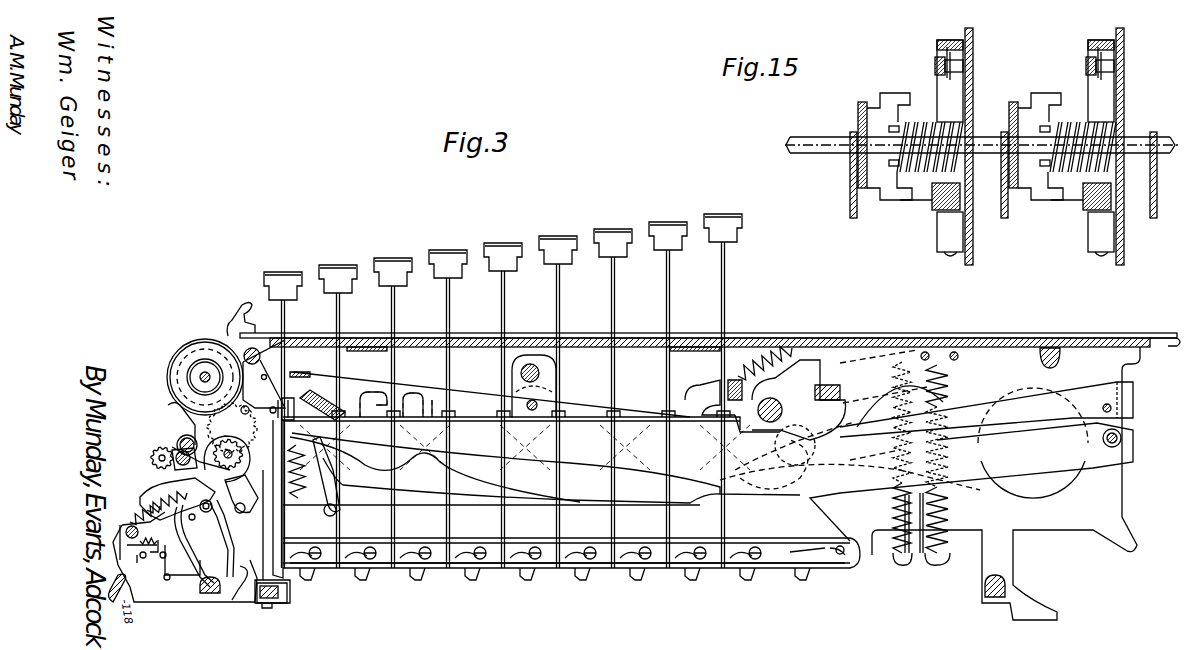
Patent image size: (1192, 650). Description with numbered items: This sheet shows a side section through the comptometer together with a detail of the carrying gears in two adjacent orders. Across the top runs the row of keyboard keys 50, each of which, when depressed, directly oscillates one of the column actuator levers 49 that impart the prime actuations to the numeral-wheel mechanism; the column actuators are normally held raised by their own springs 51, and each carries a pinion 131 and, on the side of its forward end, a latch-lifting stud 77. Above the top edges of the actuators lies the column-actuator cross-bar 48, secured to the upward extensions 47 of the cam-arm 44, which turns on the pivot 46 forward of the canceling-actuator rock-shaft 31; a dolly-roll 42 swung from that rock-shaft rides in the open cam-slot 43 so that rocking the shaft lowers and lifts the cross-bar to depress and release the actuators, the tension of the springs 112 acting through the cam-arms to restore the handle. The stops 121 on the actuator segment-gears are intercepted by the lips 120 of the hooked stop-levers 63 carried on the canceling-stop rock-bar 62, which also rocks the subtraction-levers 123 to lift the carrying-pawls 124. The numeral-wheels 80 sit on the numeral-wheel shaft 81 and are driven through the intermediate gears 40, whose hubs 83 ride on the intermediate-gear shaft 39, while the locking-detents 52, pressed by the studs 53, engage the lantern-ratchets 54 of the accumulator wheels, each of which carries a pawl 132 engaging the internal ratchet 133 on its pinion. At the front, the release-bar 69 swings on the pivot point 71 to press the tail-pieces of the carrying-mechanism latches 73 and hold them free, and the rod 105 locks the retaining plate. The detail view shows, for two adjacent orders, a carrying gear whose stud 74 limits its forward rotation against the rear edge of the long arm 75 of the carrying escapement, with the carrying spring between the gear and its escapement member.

In FIG. 3, the canceling-actuator rock-shaft 31 is at (770, 405).
In FIG. 3, the intermediate-gear shaft 39 is at (178, 440).
In FIG. 3, the intermediate gears 40 is at (168, 405).
In FIG. 3, the dolly-roll 42 is at (850, 459).
In FIG. 3, the cam-slot 43 is at (775, 435).
In FIG. 3, the cam-arm 44 is at (580, 405).
In FIG. 3, the pivot 46 is at (527, 402).
In FIG. 3, the upward extensions 47 is at (718, 382).
In FIG. 3, the column-actuator cross-bar 48 is at (741, 373).
In FIG. 3, the column actuator levers 49 is at (424, 410).
In FIG. 3, the keyboard keys 50 is at (385, 260).
In FIG. 3, the springs 51 is at (890, 556).
In FIG. 3, the locking-detents 52 is at (245, 545).
In FIG. 3, the studs 53 is at (272, 518).
In FIG. 3, the lantern-ratchets 54 is at (571, 594).
In FIG. 3, the canceling-stop rock-bar 62 is at (266, 608).
In FIG. 3, the hooked stop-levers 63 is at (262, 596).
In FIG. 3, the release-bar 69 is at (116, 582).
In FIG. 3, the pivot point 71 is at (125, 536).
In FIG. 3, the carrying-mechanism latches 73 is at (122, 532).
In FIG. 15, the stud 74 is at (938, 210).
In FIG. 15, the arm of the carrying escapement 75 is at (920, 200).
In FIG. 3, the latch-lifting stud 77 is at (205, 525).
In FIG. 3, the numeral-wheels 80 is at (193, 345).
In FIG. 3, the numeral-wheel shaft 81 is at (205, 370).
In FIG. 3, the hub 83 is at (172, 447).
In FIG. 3, the rod 105 is at (176, 462).
In FIG. 3, the springs 112 is at (775, 345).
In FIG. 3, the lips 120 is at (227, 449).
In FIG. 3, the stops 121 is at (293, 428).
In FIG. 3, the subtraction-levers 123 is at (248, 305).
In FIG. 3, the carrying-pawls 124 is at (232, 600).
In FIG. 3, the pinions 131 is at (158, 502).
In FIG. 3, the pawl 132 is at (567, 606).
In FIG. 3, the ratchet 133 is at (150, 490).